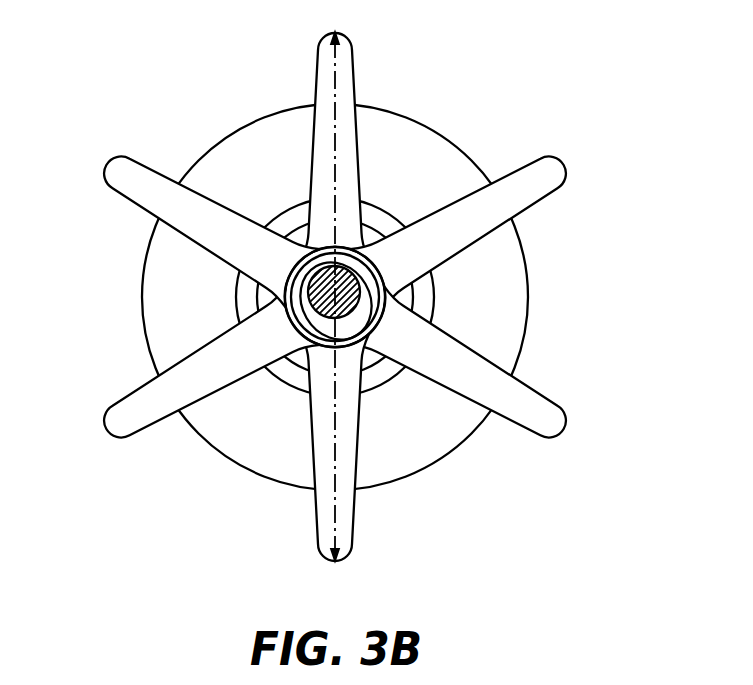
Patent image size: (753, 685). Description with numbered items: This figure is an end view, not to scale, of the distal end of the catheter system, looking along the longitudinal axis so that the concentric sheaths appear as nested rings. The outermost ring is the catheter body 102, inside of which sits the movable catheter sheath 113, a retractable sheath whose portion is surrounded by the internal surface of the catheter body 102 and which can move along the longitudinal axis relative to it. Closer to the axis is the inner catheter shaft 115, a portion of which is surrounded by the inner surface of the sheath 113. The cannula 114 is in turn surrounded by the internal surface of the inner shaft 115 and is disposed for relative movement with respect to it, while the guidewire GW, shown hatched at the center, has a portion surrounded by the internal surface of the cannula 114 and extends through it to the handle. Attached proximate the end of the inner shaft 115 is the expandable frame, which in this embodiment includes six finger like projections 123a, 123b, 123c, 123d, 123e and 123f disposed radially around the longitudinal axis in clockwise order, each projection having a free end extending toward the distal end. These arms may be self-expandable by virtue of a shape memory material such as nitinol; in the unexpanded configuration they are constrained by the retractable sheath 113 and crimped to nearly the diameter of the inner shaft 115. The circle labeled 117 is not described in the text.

The catheter body 102 is at (390, 210).
The movable catheter sheath 113 is at (388, 294).
The cannula 114 is at (286, 297).
The inner catheter shaft 115 is at (388, 300).
The base disc 117 is at (142, 308).
The finger like projection 123a is at (354, 66).
The finger like projection 123b is at (545, 196).
The finger like projection 123c is at (557, 406).
The finger like projection 123d is at (354, 533).
The finger like projection 123e is at (138, 431).
The finger like projection 123f is at (148, 168).
The guidewire GW is at (320, 313).